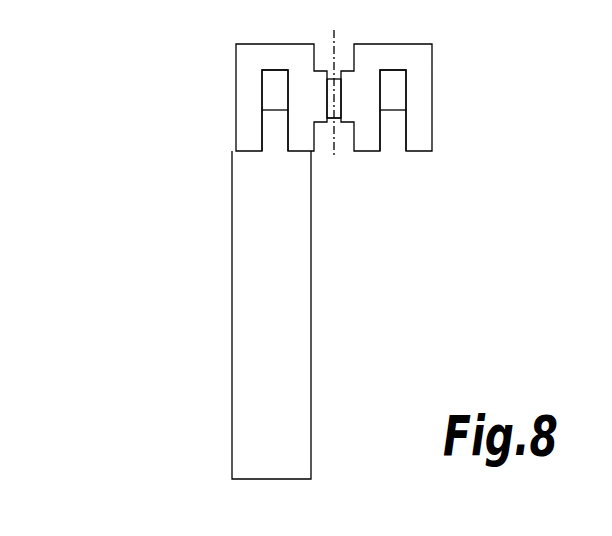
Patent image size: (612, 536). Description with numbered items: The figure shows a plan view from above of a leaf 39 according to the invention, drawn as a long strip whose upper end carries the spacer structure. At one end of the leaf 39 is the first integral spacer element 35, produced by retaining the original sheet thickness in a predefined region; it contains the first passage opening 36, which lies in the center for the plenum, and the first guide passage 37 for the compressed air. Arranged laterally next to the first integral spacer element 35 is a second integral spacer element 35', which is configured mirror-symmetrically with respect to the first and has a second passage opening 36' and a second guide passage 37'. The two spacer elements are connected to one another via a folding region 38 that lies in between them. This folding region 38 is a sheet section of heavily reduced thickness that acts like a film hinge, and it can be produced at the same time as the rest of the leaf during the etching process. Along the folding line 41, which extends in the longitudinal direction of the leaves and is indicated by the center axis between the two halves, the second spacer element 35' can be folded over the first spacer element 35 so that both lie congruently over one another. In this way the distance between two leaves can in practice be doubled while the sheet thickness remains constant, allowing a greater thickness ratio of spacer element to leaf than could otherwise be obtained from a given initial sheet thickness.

The first integral spacer element 35 is at (227, 75).
The first passage opening 36 is at (196, 108).
The first guide passage 37 is at (194, 173).
The second integral spacer element 35' is at (446, 78).
The second passage opening 36' is at (465, 113).
The second guide passage 37' is at (465, 192).
The folding region 38 is at (339, 120).
The folding line 41 is at (334, 143).
The leaf 39 is at (178, 370).